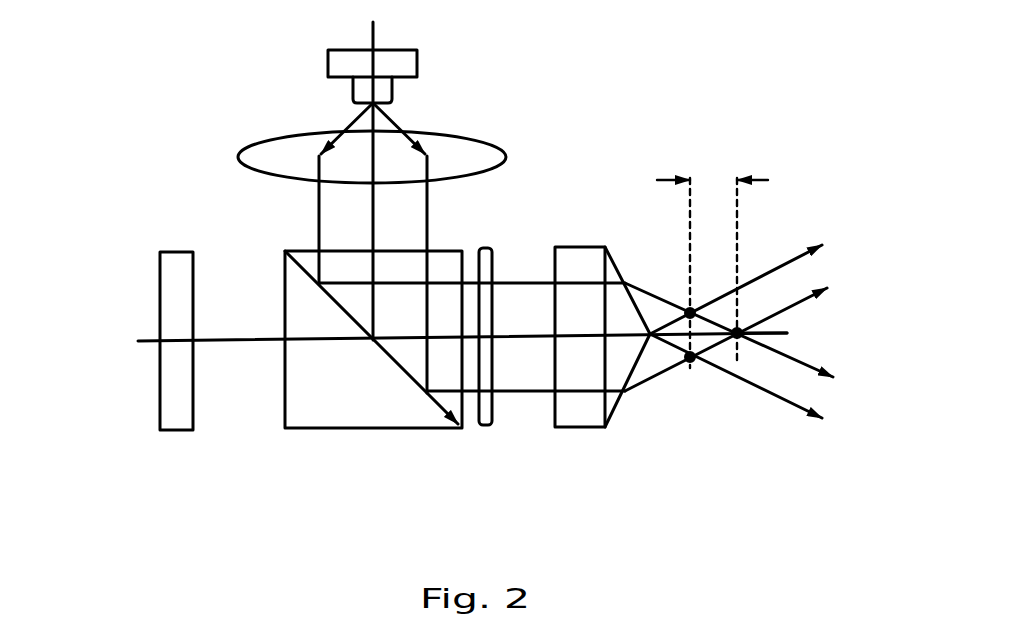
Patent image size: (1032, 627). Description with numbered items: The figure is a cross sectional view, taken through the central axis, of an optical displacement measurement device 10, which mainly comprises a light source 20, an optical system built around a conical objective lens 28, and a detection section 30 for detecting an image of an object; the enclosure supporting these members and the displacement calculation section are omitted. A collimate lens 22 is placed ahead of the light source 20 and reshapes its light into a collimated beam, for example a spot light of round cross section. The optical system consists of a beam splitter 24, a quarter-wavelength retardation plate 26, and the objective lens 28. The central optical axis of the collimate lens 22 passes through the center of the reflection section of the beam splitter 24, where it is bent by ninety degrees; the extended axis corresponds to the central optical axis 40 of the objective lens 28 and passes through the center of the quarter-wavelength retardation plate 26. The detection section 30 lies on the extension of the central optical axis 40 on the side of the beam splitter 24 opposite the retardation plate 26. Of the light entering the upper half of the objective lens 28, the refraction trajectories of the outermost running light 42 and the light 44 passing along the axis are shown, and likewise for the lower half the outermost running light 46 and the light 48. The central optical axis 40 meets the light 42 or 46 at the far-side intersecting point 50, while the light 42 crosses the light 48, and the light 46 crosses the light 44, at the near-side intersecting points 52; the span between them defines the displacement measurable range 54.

The optical displacement measurement device 10 is at (142, 150).
The light source 20 is at (410, 66).
The collimate lens 22 is at (463, 147).
The beam splitter 24 is at (398, 395).
The quarter-wavelength retardation plate 26 is at (485, 422).
The objective lens 28 is at (590, 413).
The detection section 30 is at (180, 422).
The central optical axis 40 is at (787, 333).
The outermost running light 42 is at (817, 358).
The light passing along the central optical axis 44 is at (803, 403).
The outermost running light 46 is at (802, 288).
The light passing along the central optical axis 48 is at (790, 253).
The far-side intersecting point 50 is at (737, 336).
The near-side intersecting points 52 is at (690, 360).
The displacement measurable range 54 is at (708, 180).